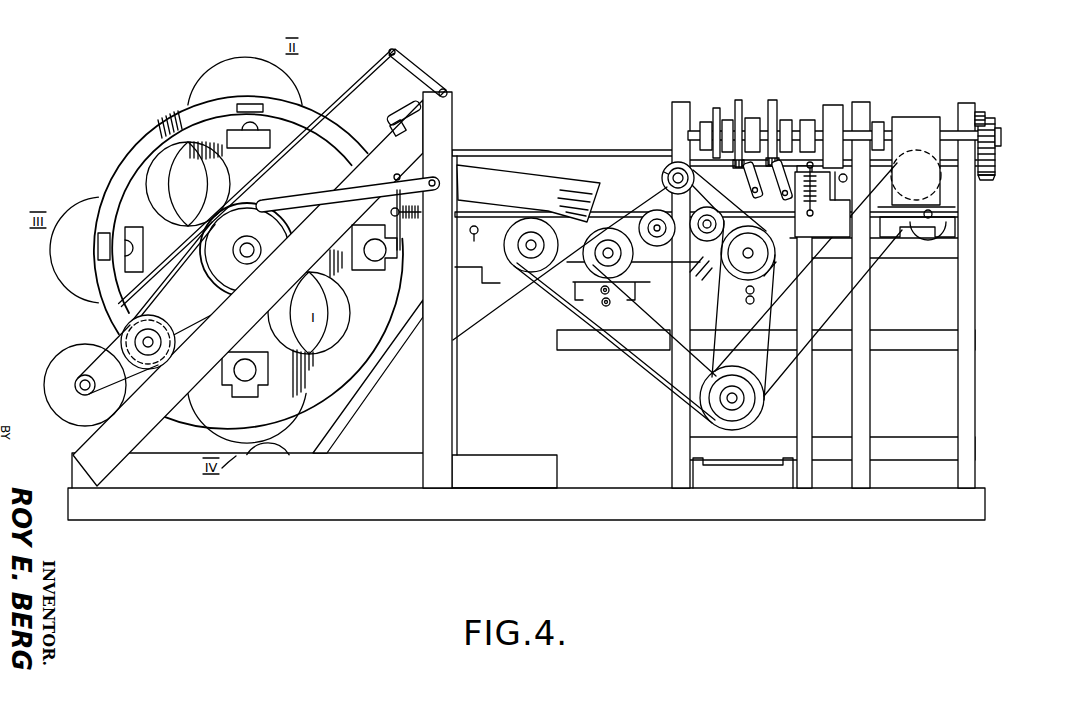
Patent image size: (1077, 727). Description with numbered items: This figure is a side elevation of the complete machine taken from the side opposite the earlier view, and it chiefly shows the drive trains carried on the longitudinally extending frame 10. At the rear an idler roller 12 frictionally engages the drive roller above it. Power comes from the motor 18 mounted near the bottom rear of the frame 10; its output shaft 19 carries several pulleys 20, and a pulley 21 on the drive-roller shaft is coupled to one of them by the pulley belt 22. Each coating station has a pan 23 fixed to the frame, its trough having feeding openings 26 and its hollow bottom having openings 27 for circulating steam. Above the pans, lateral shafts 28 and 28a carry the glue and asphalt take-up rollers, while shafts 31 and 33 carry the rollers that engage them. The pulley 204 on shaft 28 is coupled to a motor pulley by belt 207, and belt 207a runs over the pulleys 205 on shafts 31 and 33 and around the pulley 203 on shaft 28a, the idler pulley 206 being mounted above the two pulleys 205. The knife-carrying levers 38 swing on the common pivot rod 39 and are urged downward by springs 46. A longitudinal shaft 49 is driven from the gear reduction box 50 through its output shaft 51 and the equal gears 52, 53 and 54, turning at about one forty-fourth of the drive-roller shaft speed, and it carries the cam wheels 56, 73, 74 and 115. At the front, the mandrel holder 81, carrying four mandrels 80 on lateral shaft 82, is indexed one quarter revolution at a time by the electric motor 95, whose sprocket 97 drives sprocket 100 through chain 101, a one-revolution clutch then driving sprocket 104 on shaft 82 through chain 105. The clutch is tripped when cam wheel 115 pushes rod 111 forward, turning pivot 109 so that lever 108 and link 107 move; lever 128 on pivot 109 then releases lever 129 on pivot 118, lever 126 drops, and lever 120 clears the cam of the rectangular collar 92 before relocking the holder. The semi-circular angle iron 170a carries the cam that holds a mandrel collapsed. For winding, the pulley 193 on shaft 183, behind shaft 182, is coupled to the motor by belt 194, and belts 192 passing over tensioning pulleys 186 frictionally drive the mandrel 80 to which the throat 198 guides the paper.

The frame 10 is at (912, 345).
The idler roller 12 is at (928, 241).
The motor 18 is at (764, 410).
The output shaft 19 is at (730, 404).
The pulleys 20 is at (742, 410).
The pulley 21 is at (924, 150).
The pulley belt 22 is at (880, 267).
The pan 23 is at (578, 302).
The feeding openings 26 is at (600, 291).
The openings 27 is at (611, 303).
The lateral shaft 28 is at (746, 258).
The lateral shaft 28a is at (658, 247).
The lateral shaft 31 is at (707, 242).
The lateral shaft 33 is at (725, 265).
The levers 38 is at (830, 240).
The pivot rod 39 is at (842, 185).
The springs 46 is at (813, 208).
The shaft 49 is at (798, 130).
The gear reduction box 50 is at (906, 117).
The output shaft 51 is at (1001, 146).
The gear 52 is at (986, 113).
The gear 53 is at (984, 181).
The intermediate gear 54 is at (996, 127).
The rear cam wheel 56 is at (834, 105).
The cam wheel 73 is at (772, 100).
The cam wheel 74 is at (738, 100).
The mandrel 80 is at (240, 60).
The mandrel holder 81 is at (352, 352).
The lateral shaft 82 is at (250, 247).
The collars 92 is at (372, 272).
The electric motor 95 is at (52, 368).
The sprocket 97 is at (85, 396).
The sprocket 100 is at (172, 352).
The sprocket chain 101 is at (108, 339).
The sprocket 104 is at (240, 276).
The sprocket chain 105 is at (186, 334).
The link 107 is at (359, 88).
The lever 108 is at (418, 70).
The lateral pivot 109 is at (450, 91).
The rod 111 is at (592, 150).
The cam wheel 115 is at (716, 108).
The lateral pivot 118 is at (430, 195).
The lever 120 is at (400, 237).
The lever 126 is at (333, 200).
The lever 128 is at (415, 106).
The lever 129 is at (394, 126).
The angle iron 170a is at (118, 166).
The lateral shaft 182 is at (480, 241).
The lateral shaft 183 is at (522, 258).
The tensioning pulleys 186 is at (272, 458).
The pulley belts 192 is at (477, 322).
The pulley 193 is at (530, 283).
The pulley belt 194 is at (648, 367).
The throat 198 is at (532, 182).
The pulley 203 is at (600, 228).
The pulley 204 is at (772, 200).
The pulleys 205 is at (629, 212).
The idler pulley 206 is at (668, 165).
The pulley belt 207 is at (766, 373).
The pulley belt 207a is at (666, 173).